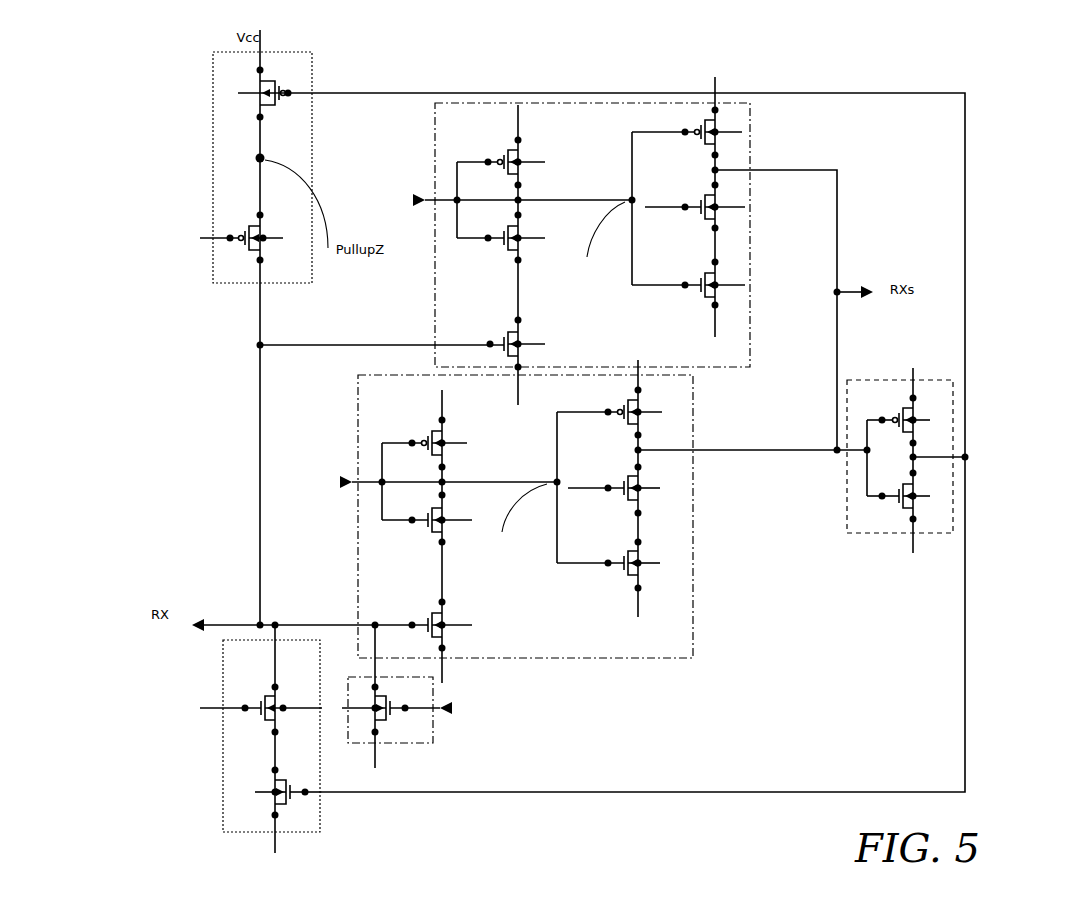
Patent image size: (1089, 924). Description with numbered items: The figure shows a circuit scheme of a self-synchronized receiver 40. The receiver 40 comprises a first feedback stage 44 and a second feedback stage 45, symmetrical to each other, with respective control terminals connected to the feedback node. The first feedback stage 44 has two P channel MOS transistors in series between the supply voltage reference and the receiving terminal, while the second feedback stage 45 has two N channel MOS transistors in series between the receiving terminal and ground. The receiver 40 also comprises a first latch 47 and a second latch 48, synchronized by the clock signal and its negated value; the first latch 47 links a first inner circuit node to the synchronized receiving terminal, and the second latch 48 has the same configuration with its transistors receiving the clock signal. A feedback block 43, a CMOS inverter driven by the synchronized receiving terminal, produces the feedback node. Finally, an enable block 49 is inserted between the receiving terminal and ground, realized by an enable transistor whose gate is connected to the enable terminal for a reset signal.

The receiver 40 is at (1031, 150).
The feedback block 43 is at (923, 392).
The first feedback stage 44 is at (233, 83).
The second feedback stage 45 is at (322, 810).
The first latch 47 is at (463, 140).
The second latch 48 is at (368, 420).
The enable block 49 is at (405, 735).